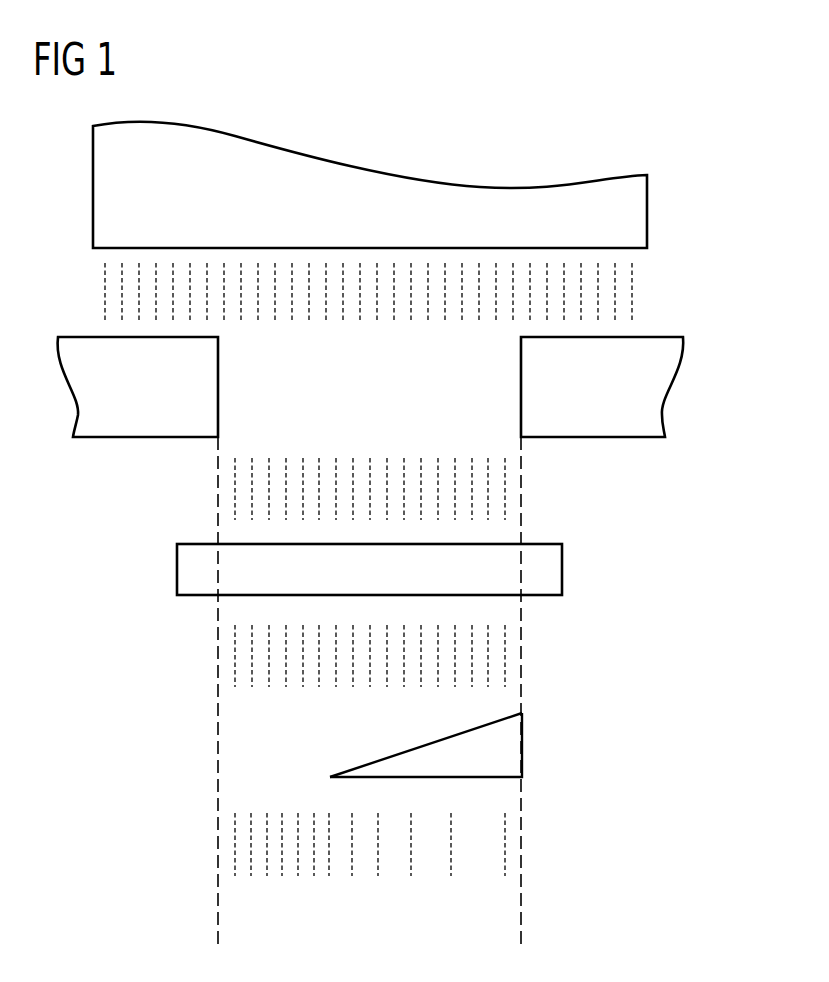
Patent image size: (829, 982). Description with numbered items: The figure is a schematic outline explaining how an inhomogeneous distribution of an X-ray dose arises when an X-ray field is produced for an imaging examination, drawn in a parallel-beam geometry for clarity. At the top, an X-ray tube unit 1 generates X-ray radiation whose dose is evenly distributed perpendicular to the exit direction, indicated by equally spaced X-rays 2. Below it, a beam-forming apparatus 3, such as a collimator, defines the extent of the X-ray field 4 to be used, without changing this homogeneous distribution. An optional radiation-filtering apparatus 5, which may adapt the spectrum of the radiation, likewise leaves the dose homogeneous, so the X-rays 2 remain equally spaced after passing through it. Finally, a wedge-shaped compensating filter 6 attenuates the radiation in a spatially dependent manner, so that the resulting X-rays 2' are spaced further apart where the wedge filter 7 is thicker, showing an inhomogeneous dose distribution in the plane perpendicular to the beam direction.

The X-ray tube unit 1 is at (93, 183).
The X-rays 2 is at (423, 470).
The X-rays 2' is at (432, 841).
The beam-forming apparatus 3 is at (163, 437).
The X-ray field 4 is at (218, 917).
The radiation-filtering apparatus 5 is at (177, 568).
The compensating filter 6 is at (366, 749).
The wedge filter 7 is at (522, 740).